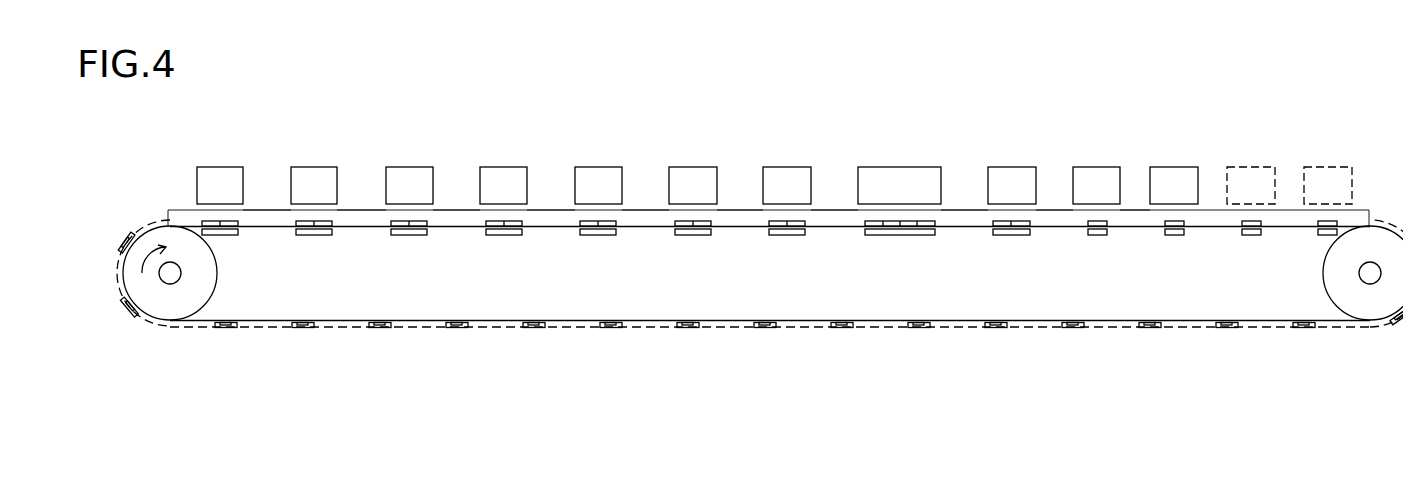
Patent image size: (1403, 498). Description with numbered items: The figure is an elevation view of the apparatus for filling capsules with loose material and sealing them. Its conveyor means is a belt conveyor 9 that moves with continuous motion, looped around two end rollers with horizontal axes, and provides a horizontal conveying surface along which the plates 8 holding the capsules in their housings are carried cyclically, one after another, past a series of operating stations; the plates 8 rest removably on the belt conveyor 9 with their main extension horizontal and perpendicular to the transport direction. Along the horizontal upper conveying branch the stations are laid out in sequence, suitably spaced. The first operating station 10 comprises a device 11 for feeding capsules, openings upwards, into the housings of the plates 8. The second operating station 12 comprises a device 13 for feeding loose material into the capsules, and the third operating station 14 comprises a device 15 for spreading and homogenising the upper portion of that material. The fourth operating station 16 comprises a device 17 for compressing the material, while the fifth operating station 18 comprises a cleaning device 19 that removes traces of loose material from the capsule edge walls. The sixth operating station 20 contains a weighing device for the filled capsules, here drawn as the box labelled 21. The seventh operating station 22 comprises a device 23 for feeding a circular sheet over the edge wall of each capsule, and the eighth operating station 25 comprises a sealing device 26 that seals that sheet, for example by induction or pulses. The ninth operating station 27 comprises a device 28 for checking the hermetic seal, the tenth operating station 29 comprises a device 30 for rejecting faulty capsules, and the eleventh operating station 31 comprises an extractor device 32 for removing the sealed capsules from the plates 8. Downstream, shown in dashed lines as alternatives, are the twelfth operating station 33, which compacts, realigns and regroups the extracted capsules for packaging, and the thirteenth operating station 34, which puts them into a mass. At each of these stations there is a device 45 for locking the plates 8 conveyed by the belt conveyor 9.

The first operating station 10 is at (190, 205).
The belt conveyor 9 is at (791, 328).
The plates 8 is at (428, 222).
The device for locking the plates 45 is at (322, 235).
The device for feeding capsules 11 is at (208, 198).
The second operating station 12 is at (283, 205).
The device for feeding loose material 13 is at (302, 198).
The third operating station 14 is at (377, 205).
The device for spreading and homogenisation 15 is at (397, 198).
The fourth operating station 16 is at (473, 205).
The device for compressing 17 is at (491, 198).
The fifth operating station 18 is at (572, 205).
The cleaning device 19 is at (586, 198).
The sixth operating station 20 is at (667, 205).
The processing station 21 is at (681, 198).
The seventh operating station 22 is at (758, 205).
The device for feeding a circular sheet 23 is at (775, 198).
The eighth operating station 25 is at (852, 205).
The sealing device 26 is at (887, 198).
The ninth operating station 27 is at (985, 205).
The device for checking the hermetic seal 28 is at (1000, 198).
The tenth operating station 29 is at (1068, 205).
The device for rejecting faulty capsules 30 is at (1084, 198).
The eleventh operating station 31 is at (1147, 205).
The extractor device 32 is at (1162, 198).
The twelfth operating station 33 is at (1226, 204).
The thirteenth operating station 34 is at (1303, 204).